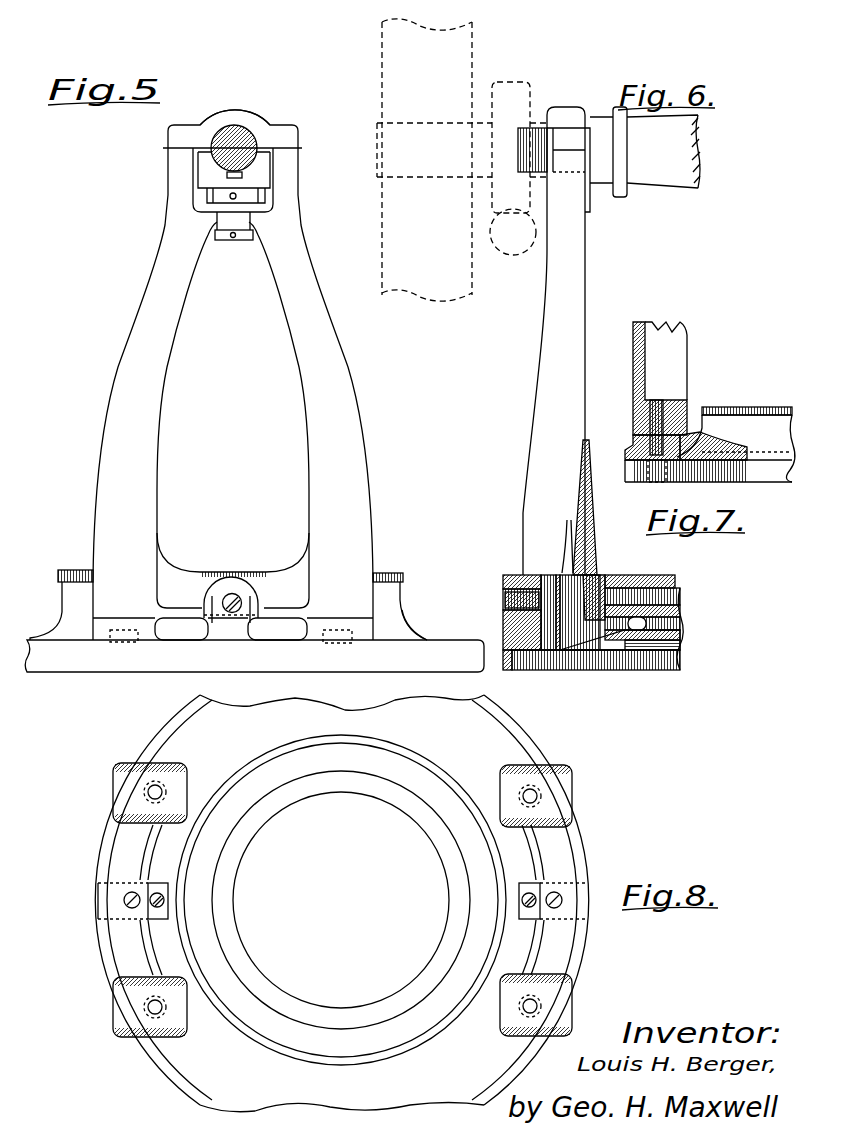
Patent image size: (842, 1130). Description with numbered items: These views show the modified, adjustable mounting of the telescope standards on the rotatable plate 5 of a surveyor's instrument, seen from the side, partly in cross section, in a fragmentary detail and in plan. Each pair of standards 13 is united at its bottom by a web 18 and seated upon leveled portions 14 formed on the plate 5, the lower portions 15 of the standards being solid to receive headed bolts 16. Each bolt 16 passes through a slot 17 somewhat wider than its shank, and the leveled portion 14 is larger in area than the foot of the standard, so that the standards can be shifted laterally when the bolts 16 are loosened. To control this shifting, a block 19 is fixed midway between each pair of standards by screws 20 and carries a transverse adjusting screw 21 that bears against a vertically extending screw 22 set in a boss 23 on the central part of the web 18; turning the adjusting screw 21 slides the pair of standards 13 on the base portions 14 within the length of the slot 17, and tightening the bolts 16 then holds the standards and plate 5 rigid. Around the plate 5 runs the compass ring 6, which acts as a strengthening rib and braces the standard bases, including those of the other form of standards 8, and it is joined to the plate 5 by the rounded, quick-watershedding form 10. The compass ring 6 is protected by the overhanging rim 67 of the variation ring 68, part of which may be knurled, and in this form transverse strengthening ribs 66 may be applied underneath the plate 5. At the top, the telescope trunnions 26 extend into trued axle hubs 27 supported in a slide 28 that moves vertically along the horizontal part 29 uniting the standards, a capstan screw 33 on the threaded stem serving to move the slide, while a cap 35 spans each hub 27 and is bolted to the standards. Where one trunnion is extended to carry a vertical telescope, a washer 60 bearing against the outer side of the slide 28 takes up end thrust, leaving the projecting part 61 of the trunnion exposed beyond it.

In FIG. 5, the plate 5 is at (254, 656).
In FIG. 6, the plate 5 is at (591, 660).
In FIG. 8, the plate 5 is at (513, 731).
In FIG. 5, the compass ring 6 is at (394, 597).
In FIG. 6, the compass ring 6 is at (608, 590).
In FIG. 7, the compass ring 6 is at (715, 423).
In FIG. 8, the compass ring 6 is at (415, 754).
In FIG. 8, the standard 8 is at (148, 856).
In FIG. 5, the rounded strengthening form 10 is at (406, 628).
In FIG. 5, the standard 13 is at (152, 388).
In FIG. 6, the standard 13 is at (560, 412).
In FIG. 7, the standard 13 is at (633, 360).
In FIG. 8, the standard 13 is at (116, 799).
In FIG. 5, the leveled portion 14 is at (151, 628).
In FIG. 6, the leveled portion 14 is at (520, 654).
In FIG. 7, the leveled portion 14 is at (633, 441).
In FIG. 7, the lower portion 15 is at (680, 408).
In FIG. 8, the lower portion 15 is at (184, 778).
In FIG. 5, the headed bolt 16 is at (127, 643).
In FIG. 7, the headed bolt 16 is at (645, 467).
In FIG. 8, the headed bolt 16 is at (158, 783).
In FIG. 7, the slot 17 is at (713, 457).
In FIG. 8, the slot 17 is at (168, 794).
In FIG. 5, the web 18 is at (173, 574).
In FIG. 6, the web 18 is at (568, 566).
In FIG. 8, the web 18 is at (586, 855).
In FIG. 5, the block 19 is at (246, 613).
In FIG. 6, the block 19 is at (503, 612).
In FIG. 8, the block 19 is at (168, 886).
In FIG. 6, the screw 20 is at (543, 648).
In FIG. 8, the screw 20 is at (168, 899).
In FIG. 5, the adjusting screw 21 is at (235, 600).
In FIG. 6, the adjusting screw 21 is at (508, 576).
In FIG. 8, the adjusting screw 21 is at (98, 898).
In FIG. 6, the vertically extending screw 22 is at (542, 576).
In FIG. 6, the boss 23 is at (520, 574).
In FIG. 8, the boss 23 is at (107, 876).
In FIG. 6, the trunnion 26 is at (670, 178).
In FIG. 5, the axle hub 27 is at (254, 131).
In FIG. 5, the slide 28 is at (264, 173).
In FIG. 6, the slide 28 is at (552, 198).
In FIG. 5, the horizontal part 29 is at (244, 220).
In FIG. 5, the capstan screw 33 is at (229, 578).
In FIG. 5, the cap 35 is at (232, 110).
In FIG. 6, the cap 35 is at (574, 112).
In FIG. 6, the washer 60 is at (544, 127).
In FIG. 6, the projecting part of the trunnion 61 is at (518, 151).
In FIG. 6, the transverse strengthening rib 66 is at (610, 643).
In FIG. 5, the overhanging rim 67 is at (389, 572).
In FIG. 6, the overhanging rim 67 is at (590, 577).
In FIG. 7, the overhanging rim 67 is at (753, 408).
In FIG. 6, the variation ring 68 is at (607, 648).